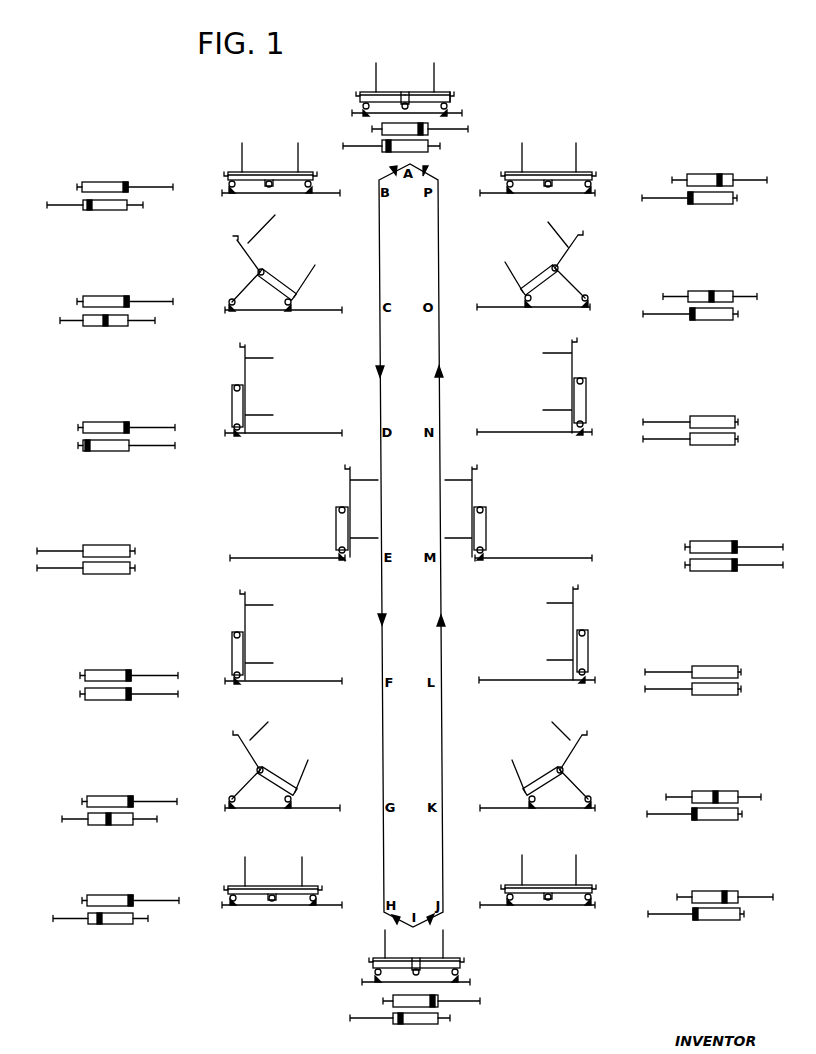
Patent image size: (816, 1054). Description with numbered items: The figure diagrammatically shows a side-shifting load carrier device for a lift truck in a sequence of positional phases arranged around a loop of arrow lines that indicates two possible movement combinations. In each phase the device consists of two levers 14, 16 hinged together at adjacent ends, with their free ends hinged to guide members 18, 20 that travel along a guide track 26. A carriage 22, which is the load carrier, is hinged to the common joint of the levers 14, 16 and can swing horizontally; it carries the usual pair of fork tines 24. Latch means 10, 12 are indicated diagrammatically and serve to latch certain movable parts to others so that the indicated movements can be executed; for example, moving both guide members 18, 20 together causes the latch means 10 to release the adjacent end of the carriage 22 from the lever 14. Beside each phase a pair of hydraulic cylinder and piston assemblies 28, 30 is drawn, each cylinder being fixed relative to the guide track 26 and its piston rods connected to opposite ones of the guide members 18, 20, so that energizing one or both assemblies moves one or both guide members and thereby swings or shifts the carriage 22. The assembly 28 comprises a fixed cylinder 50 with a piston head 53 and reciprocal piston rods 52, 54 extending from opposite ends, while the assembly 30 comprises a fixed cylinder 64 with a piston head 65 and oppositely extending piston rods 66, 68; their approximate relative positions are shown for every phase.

The latch means 10 is at (365, 92).
The latch means 12 is at (448, 92).
The lever 14 is at (389, 92).
The lever 16 is at (421, 92).
The guide member 18 is at (362, 114).
The guide member 20 is at (450, 112).
The carriage 22 is at (405, 92).
The fork tines 24 is at (376, 64).
The guide track 26 is at (378, 115).
The hydraulic cylinder and piston assembly 28 is at (430, 130).
The hydraulic cylinder and piston assembly 30 is at (430, 147).
The fixed cylinder 50 is at (90, 182).
The piston rod 52 is at (82, 185).
The piston head 53 is at (125, 182).
The piston rod 54 is at (135, 186).
The fixed cylinder 64 is at (118, 210).
The piston head 65 is at (90, 210).
The piston rod 66 is at (70, 206).
The piston rod 68 is at (135, 206).